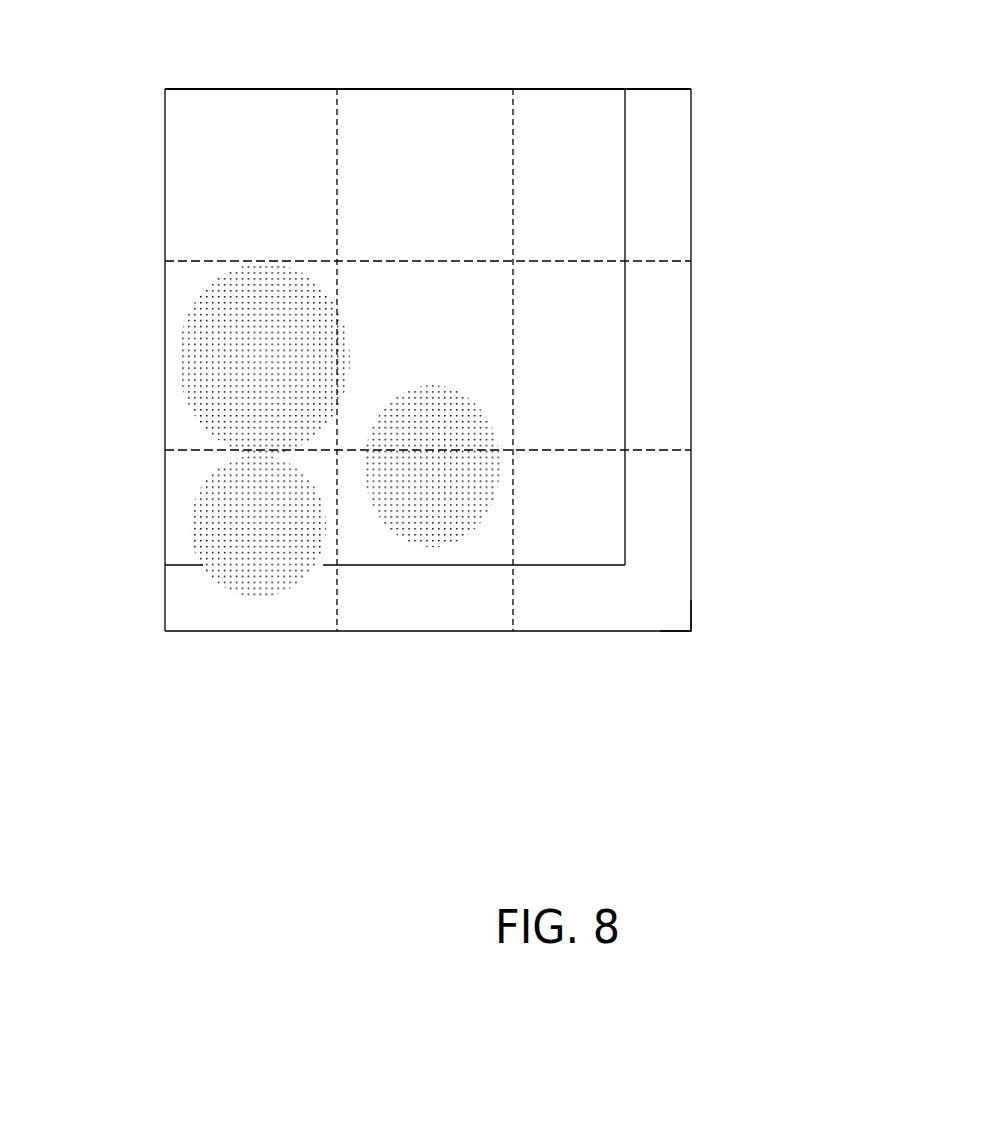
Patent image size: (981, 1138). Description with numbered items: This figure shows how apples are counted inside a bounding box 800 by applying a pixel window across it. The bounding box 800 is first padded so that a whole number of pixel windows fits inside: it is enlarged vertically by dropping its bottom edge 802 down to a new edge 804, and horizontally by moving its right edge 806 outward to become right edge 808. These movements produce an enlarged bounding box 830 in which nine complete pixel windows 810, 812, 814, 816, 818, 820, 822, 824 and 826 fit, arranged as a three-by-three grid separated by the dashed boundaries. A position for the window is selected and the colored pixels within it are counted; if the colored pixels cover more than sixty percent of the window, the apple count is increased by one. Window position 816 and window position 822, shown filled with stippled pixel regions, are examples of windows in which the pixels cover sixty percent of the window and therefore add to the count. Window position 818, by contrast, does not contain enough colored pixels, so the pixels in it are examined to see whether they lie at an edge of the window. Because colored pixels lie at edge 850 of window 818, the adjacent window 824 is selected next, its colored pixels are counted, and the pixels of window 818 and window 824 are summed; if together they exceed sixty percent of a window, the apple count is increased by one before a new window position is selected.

The bounding box 800 is at (390, 565).
The bottom edge 802 is at (202, 565).
The edge 804 is at (282, 631).
The right edge 806 is at (625, 179).
The right edge 808 is at (691, 269).
The pixel window 810 is at (223, 97).
The pixel window 812 is at (363, 95).
The pixel window 814 is at (542, 96).
The window position 816 is at (175, 345).
The window position 818 is at (454, 331).
The pixel window 820 is at (682, 342).
The window position 822 is at (173, 503).
The window 824 is at (493, 555).
The pixel window 826 is at (682, 502).
The enlarged bounding box 830 is at (691, 631).
The edge 850 is at (500, 449).